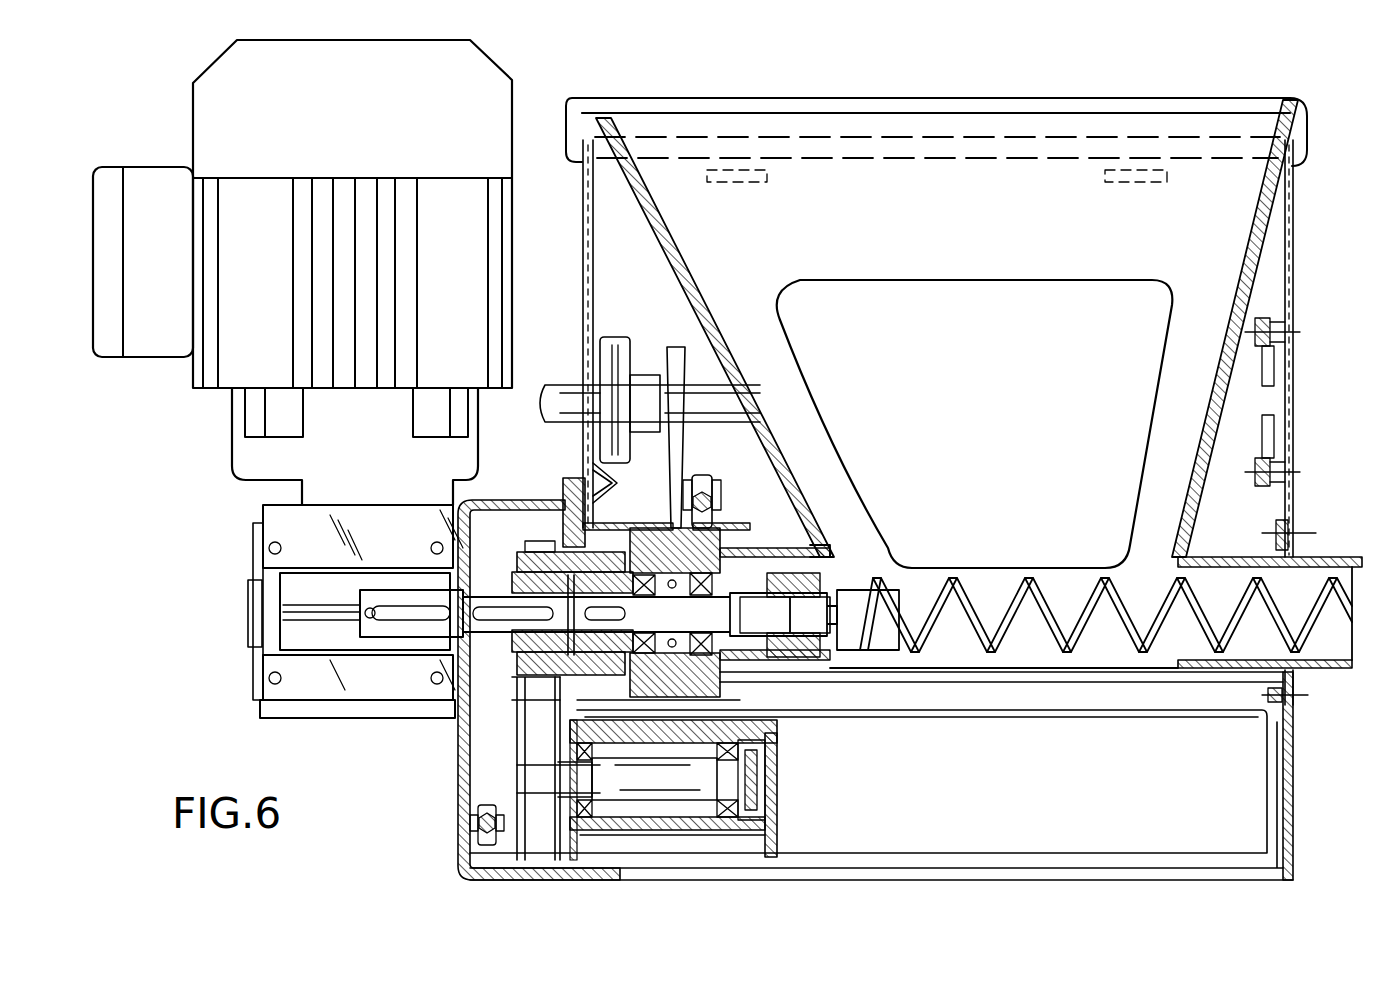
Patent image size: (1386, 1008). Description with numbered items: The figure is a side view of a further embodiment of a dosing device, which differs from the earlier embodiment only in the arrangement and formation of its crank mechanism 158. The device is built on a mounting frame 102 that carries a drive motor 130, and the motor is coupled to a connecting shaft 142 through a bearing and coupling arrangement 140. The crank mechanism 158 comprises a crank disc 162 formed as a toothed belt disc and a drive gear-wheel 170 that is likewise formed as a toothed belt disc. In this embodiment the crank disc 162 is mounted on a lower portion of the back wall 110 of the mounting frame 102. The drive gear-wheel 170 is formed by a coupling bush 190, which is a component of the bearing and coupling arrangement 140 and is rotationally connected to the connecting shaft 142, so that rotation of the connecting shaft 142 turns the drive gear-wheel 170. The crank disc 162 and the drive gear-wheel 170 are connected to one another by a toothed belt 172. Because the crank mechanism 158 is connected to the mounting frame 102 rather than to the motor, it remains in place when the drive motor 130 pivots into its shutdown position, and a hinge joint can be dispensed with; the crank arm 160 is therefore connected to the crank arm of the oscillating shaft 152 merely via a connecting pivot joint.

The mounting frame 102 is at (1314, 220).
The back wall 110 is at (497, 875).
The drive motor 130 is at (386, 114).
The bearing and coupling arrangement 140 is at (733, 528).
The connecting shaft 142 is at (723, 612).
The oscillating shaft 152 is at (866, 397).
The crank mechanism 158 is at (488, 781).
The crank arm 160 is at (497, 843).
The crank disc 162 is at (520, 730).
The drive gear-wheel 170 is at (545, 555).
The toothed belt 172 is at (525, 683).
The coupling bush 190 is at (512, 547).